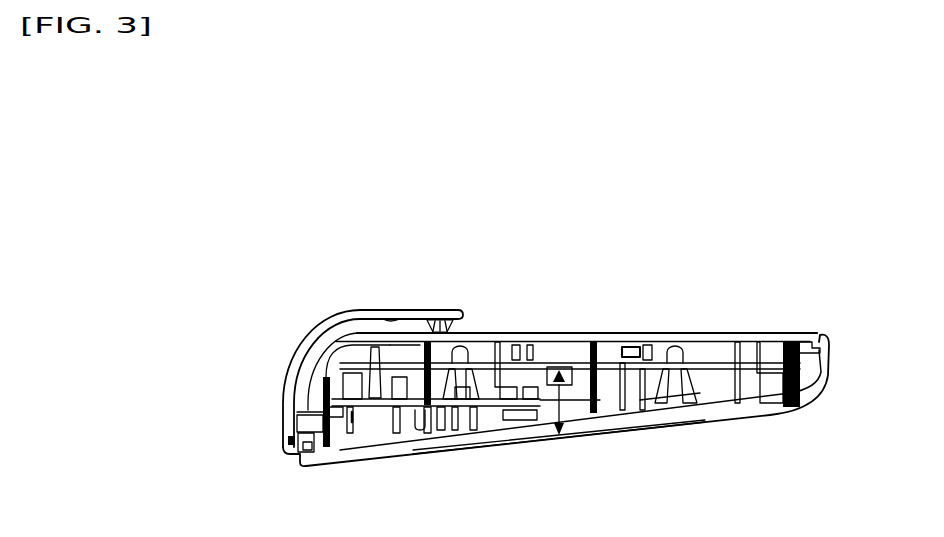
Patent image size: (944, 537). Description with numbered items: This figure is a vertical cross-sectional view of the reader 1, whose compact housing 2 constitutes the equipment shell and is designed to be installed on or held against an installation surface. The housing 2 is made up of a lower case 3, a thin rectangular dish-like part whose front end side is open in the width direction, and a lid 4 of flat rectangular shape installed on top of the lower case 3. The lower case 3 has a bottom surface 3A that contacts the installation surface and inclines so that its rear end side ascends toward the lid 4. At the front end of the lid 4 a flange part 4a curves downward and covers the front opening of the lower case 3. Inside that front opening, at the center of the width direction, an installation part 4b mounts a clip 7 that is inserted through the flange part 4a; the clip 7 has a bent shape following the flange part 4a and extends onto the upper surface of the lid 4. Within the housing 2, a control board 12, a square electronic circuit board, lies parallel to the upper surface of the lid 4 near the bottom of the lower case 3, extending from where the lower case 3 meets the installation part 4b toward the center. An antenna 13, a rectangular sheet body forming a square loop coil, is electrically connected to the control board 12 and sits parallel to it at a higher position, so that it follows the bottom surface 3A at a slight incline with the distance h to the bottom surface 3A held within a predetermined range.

The reader 1 is at (430, 278).
The housing 2 is at (776, 330).
The lower case 3 is at (818, 384).
The bottom surface 3A is at (713, 420).
The lid 4 is at (643, 337).
The flange part 4a is at (296, 362).
The installation part 4b is at (297, 443).
The clip 7 is at (335, 323).
The control board 12 is at (441, 410).
The antenna 13 is at (542, 338).
The distance h is at (575, 436).